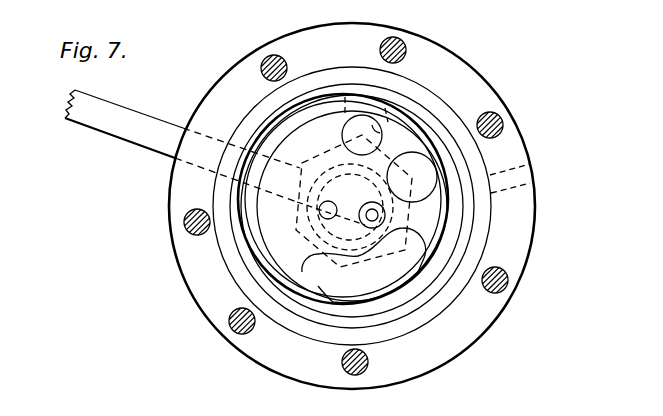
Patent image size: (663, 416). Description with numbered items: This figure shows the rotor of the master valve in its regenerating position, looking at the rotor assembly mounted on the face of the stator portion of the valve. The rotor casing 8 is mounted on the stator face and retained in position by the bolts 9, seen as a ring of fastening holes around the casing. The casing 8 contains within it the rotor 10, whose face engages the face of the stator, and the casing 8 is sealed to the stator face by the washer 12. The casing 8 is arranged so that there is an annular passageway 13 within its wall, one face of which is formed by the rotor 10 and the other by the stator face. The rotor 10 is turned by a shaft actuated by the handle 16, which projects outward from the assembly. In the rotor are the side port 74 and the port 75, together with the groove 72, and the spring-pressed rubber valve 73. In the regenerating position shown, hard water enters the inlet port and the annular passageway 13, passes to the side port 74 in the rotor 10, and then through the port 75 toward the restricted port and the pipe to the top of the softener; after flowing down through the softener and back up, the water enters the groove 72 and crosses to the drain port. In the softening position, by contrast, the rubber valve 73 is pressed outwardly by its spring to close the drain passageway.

The rotor casing 8 is at (217, 318).
The bolts 9 is at (504, 282).
The rotor 10 is at (285, 142).
The washer 12 is at (246, 270).
The annular passageway 13 is at (297, 100).
The handle 16 is at (107, 125).
The groove 72 is at (328, 282).
The rubber valve 73 is at (434, 178).
The side port 74 is at (362, 115).
The port 75 is at (383, 130).